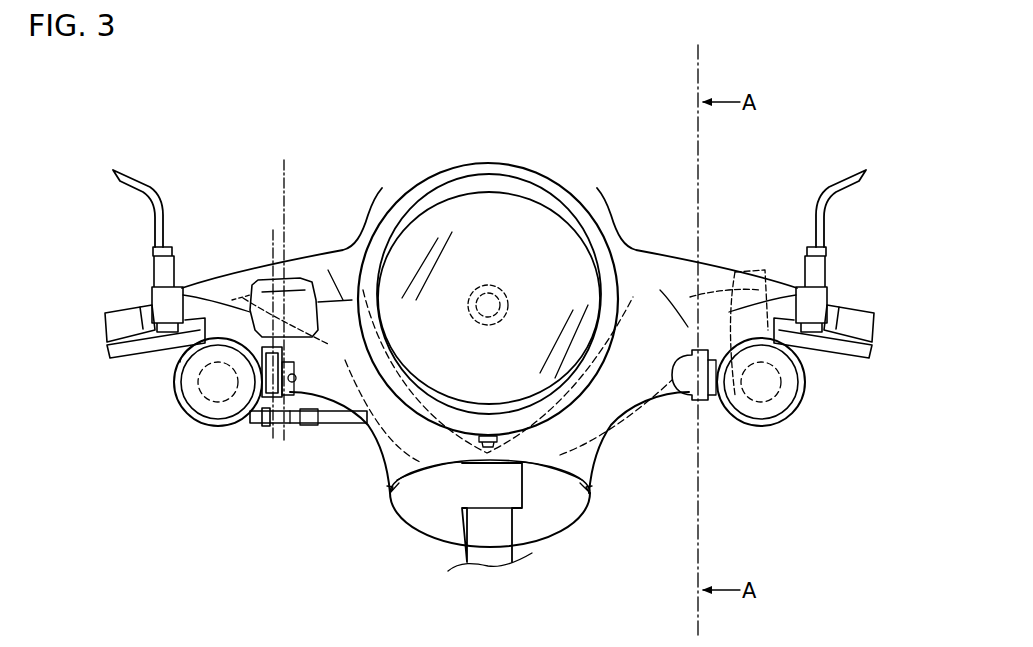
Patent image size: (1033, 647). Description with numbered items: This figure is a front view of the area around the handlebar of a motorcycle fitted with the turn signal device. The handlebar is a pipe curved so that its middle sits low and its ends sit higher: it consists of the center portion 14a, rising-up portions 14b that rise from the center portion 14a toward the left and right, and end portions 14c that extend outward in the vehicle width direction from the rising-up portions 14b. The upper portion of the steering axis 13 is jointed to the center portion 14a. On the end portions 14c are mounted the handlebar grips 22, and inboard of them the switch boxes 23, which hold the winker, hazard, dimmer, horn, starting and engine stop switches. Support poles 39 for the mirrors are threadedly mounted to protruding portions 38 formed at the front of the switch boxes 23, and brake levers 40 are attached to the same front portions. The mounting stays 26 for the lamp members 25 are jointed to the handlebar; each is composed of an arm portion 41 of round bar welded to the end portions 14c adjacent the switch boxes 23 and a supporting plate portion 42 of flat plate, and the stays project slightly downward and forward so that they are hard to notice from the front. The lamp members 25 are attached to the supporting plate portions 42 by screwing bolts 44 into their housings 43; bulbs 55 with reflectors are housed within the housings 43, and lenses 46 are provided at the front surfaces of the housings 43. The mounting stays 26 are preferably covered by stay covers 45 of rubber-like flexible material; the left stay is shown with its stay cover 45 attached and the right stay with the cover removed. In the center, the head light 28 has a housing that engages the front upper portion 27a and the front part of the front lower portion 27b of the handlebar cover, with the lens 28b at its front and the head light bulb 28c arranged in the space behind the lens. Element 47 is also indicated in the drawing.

The steering axis 13 is at (503, 533).
The center portion 14a is at (440, 477).
The rising-up portions 14b is at (350, 370).
The end portions 14c is at (273, 265).
The handlebar grips 22 is at (125, 317).
The switch boxes 23 is at (207, 280).
The lamp members 25 is at (207, 440).
The mounting stays 26 is at (328, 270).
The front upper portion 27a is at (298, 310).
The front lower portion 27b is at (583, 467).
The head light 28 is at (500, 160).
The lens 28b is at (540, 228).
The head light bulb 28c is at (468, 303).
The protruding portions 38 is at (162, 305).
The support poles 39 is at (138, 180).
The brake levers 40 is at (160, 345).
The arm portions 41 is at (283, 289).
The supporting plate portions 42 is at (285, 428).
The housings 43 is at (270, 424).
The bolts 44 is at (295, 425).
The stay covers 45 is at (705, 410).
The lenses 46 is at (205, 410).
The rod fastener 47 is at (304, 426).
The bulbs 55 is at (200, 387).